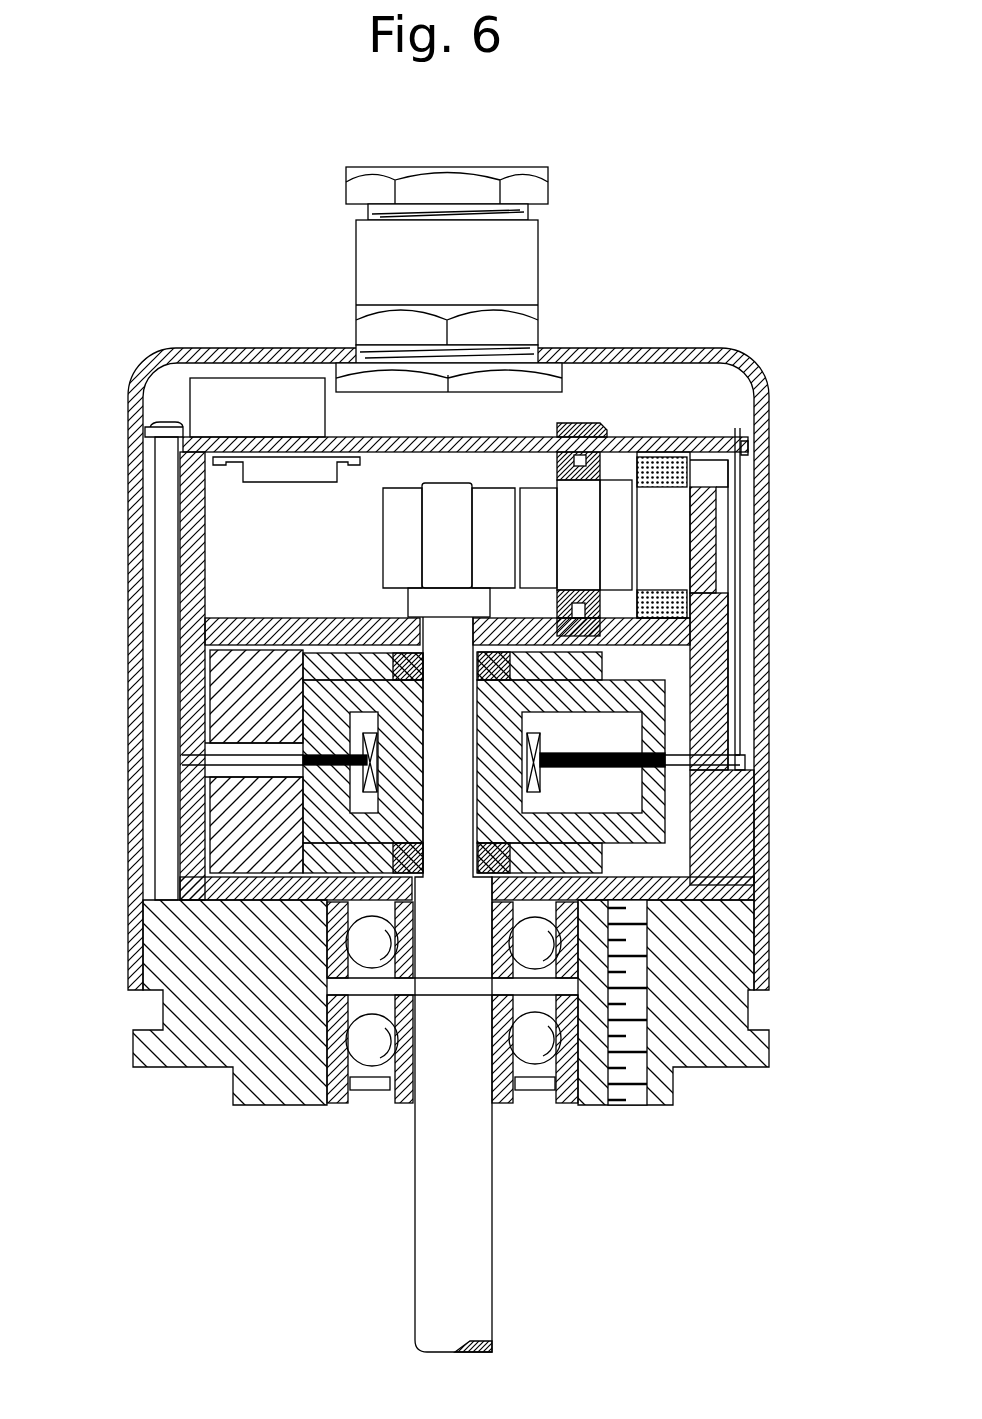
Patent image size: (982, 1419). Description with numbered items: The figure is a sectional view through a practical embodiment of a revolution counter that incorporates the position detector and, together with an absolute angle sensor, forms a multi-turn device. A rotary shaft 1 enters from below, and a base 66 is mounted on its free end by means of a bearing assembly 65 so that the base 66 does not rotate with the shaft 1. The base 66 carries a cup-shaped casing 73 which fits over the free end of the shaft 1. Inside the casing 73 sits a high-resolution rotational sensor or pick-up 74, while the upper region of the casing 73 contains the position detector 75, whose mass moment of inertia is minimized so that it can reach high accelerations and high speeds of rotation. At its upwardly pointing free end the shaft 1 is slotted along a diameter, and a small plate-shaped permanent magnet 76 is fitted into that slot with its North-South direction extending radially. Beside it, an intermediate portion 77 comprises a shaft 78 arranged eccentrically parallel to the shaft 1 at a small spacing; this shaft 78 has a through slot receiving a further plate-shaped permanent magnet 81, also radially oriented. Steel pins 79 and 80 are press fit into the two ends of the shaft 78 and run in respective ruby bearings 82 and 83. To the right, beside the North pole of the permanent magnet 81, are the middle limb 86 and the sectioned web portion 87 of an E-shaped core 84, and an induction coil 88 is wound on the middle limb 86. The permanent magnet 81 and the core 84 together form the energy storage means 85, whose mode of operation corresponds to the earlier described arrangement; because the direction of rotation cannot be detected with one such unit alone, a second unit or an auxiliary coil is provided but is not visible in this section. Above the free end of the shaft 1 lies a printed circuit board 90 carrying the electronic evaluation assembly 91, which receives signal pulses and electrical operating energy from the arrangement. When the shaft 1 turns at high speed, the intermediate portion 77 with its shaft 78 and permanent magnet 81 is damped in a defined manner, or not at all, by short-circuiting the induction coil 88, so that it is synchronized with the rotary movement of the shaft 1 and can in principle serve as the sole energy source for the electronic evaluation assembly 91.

The rotary shaft 1 is at (472, 1246).
The bearing assembly 65 is at (372, 1045).
The base 66 is at (160, 1043).
The cup-shaped casing 73 is at (132, 648).
The high-resolution rotational sensor 74 is at (617, 749).
The position detector 75 is at (375, 548).
The permanent magnet 76 is at (383, 503).
The intermediate portion 77 is at (597, 412).
The shaft 78 is at (567, 500).
The steel pin 79 is at (540, 493).
The steel pin 80 is at (600, 606).
The permanent magnet 81 is at (537, 573).
The ruby bearing 82 is at (565, 440).
The ruby bearing 83 is at (600, 632).
The E-shaped core 84 is at (716, 480).
The energy storage means 85 is at (628, 473).
The middle limb 86 is at (668, 549).
The web portion 87 is at (736, 503).
The induction coil 88 is at (683, 458).
The printed circuit board 90 is at (262, 437).
The electronic evaluation assembly 91 is at (262, 462).